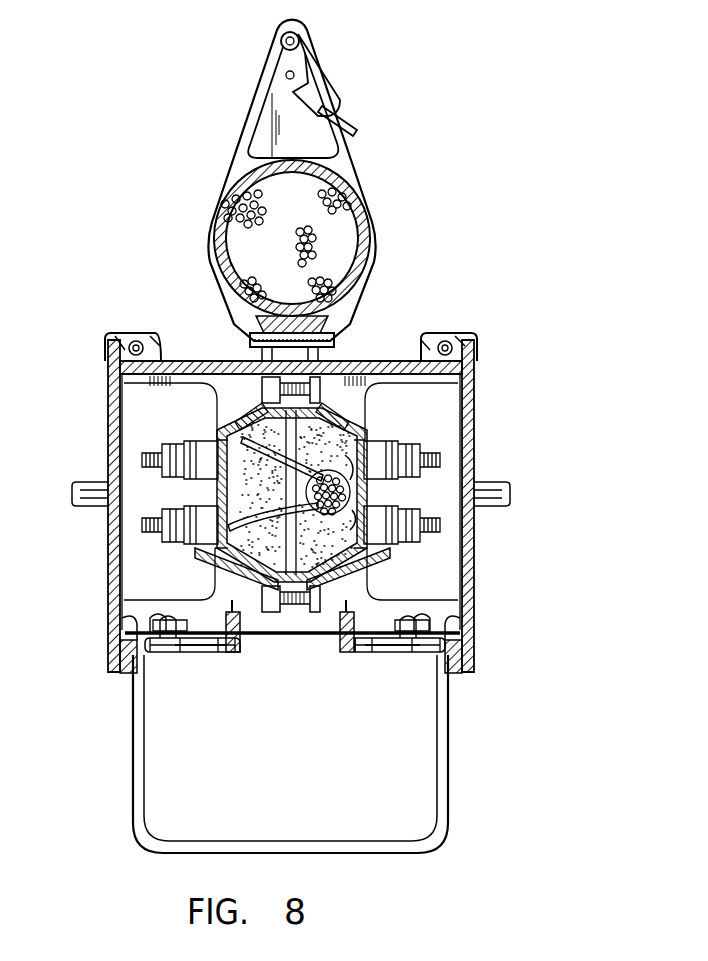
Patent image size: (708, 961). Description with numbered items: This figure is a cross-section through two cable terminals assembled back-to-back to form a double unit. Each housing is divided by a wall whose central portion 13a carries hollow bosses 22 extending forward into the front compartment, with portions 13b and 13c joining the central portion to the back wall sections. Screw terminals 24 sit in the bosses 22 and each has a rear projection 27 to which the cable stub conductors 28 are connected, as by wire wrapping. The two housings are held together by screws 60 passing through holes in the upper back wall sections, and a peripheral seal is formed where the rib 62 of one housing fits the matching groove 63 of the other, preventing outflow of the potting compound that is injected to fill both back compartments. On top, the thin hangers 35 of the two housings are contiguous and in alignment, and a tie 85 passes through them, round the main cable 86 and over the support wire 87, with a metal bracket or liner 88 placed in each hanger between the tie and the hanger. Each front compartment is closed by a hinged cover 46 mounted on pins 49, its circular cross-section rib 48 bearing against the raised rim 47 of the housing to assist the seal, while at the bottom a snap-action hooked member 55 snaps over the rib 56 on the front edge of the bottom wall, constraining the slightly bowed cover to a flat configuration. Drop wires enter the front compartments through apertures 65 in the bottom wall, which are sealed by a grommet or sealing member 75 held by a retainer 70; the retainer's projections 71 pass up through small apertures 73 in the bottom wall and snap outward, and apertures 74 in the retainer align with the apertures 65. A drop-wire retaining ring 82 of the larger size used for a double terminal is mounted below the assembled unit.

The support wire 87 is at (298, 41).
The metal bracket or liner 88 is at (336, 350).
The tie 85 is at (366, 234).
The main cable 86 is at (350, 206).
The groove 63 is at (254, 358).
The hinged cover 46 is at (112, 452).
The raised rim 47 is at (112, 366).
The pins 49 is at (136, 346).
The circular cross-section rib 48 is at (140, 348).
The hangers 35 is at (250, 352).
The screws 60 is at (376, 372).
The rib 62 is at (322, 358).
The wall portion 13b is at (214, 368).
The cable stub conductors 28 is at (270, 402).
The projection 27 is at (360, 446).
The hollow bosses 22 is at (196, 456).
The screw terminals 24 is at (150, 441).
The central portion 13a is at (190, 514).
The wall portion 13c is at (248, 622).
The projections 71 is at (122, 626).
The rib 56 is at (126, 634).
The snap-action hooked member 55 is at (116, 660).
The retainer 70 is at (162, 642).
The grommet or sealing member 75 is at (182, 650).
The apertures 65 is at (204, 654).
The apertures 73 is at (228, 654).
The apertures 74 is at (236, 654).
The drop-wire retaining ring 82 is at (440, 794).